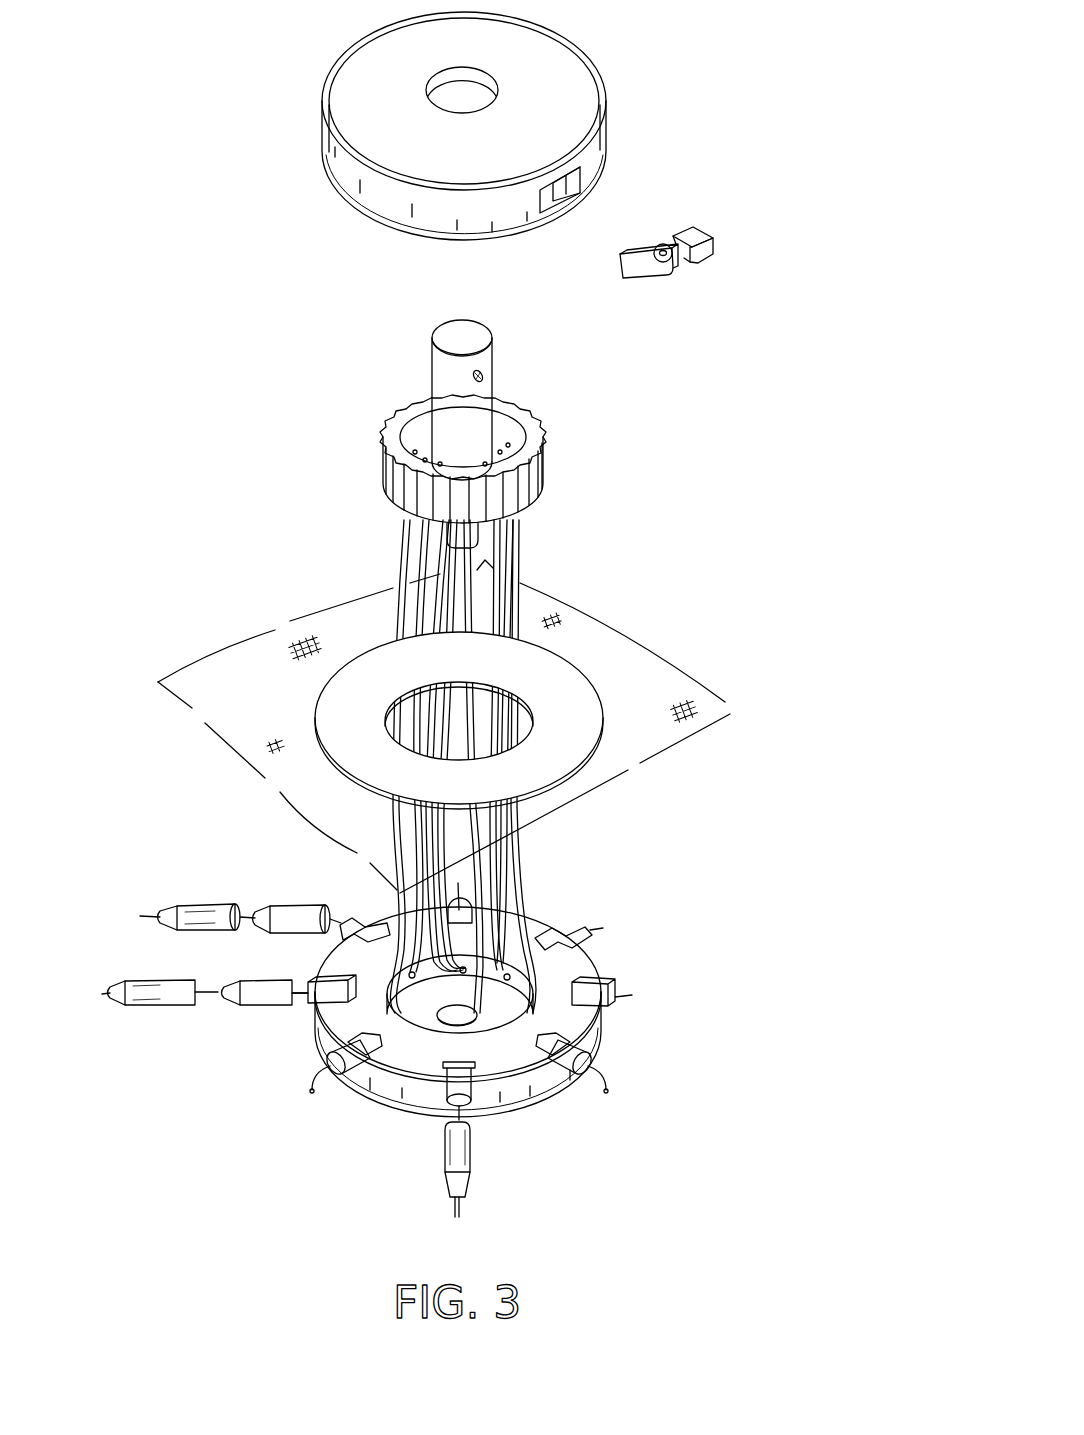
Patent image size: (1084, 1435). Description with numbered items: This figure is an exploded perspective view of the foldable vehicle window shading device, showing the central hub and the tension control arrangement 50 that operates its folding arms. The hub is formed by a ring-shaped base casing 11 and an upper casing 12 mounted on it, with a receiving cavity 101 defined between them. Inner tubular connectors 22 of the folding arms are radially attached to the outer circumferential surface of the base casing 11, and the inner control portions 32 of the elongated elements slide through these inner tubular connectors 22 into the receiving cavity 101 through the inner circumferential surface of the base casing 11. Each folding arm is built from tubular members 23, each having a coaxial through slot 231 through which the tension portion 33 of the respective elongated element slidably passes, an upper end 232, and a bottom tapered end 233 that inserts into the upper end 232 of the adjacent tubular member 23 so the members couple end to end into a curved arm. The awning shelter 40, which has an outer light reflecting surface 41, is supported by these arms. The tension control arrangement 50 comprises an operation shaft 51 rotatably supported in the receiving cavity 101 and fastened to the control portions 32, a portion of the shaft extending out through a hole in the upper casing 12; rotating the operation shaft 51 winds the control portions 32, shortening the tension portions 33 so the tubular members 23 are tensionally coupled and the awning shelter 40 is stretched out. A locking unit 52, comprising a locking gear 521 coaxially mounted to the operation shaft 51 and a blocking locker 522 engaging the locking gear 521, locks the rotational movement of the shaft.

The upper casing 12 is at (593, 150).
The tension control arrangement 50 is at (673, 361).
The operation shaft 51 is at (470, 403).
The locking unit 52 is at (625, 456).
The locking gear 521 is at (522, 500).
The blocking locker 522 is at (653, 268).
The inner control portion 32 is at (403, 568).
The awning shelter 40 is at (228, 745).
The outer light reflecting surface 41 is at (657, 687).
The receiving cavity 101 is at (513, 835).
The base casing 11 is at (548, 1097).
The inner tubular connector 22 is at (583, 1062).
The tubular member 23 is at (351, 1043).
The coaxial through slot 231 is at (240, 908).
The upper end 232 is at (465, 1123).
The bottom tapered end 233 is at (472, 1193).
The tension portion 33 is at (214, 1000).